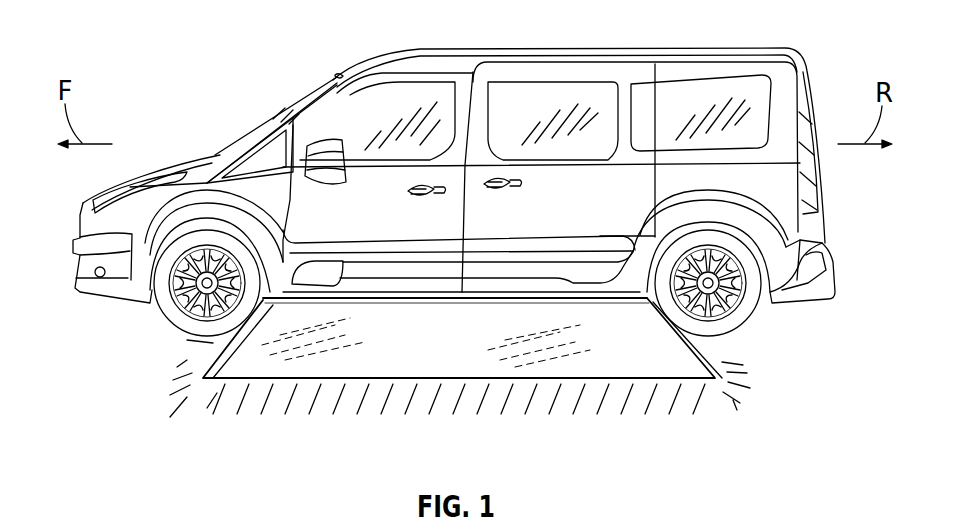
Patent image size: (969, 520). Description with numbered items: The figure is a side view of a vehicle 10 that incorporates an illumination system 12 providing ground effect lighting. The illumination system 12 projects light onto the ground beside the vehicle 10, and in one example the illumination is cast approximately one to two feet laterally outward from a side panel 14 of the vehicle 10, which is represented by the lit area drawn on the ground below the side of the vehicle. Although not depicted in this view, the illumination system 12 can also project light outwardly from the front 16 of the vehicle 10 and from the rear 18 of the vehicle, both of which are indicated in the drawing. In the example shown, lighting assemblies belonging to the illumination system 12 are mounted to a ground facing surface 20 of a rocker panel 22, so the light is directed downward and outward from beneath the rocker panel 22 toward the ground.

The vehicle 10 is at (148, 36).
The illumination system 12 is at (682, 373).
The side panel 14 is at (346, 233).
The front 16 is at (73, 245).
The rear 18 is at (818, 200).
The ground facing surface 20 is at (387, 302).
The rocker panel 22 is at (398, 287).